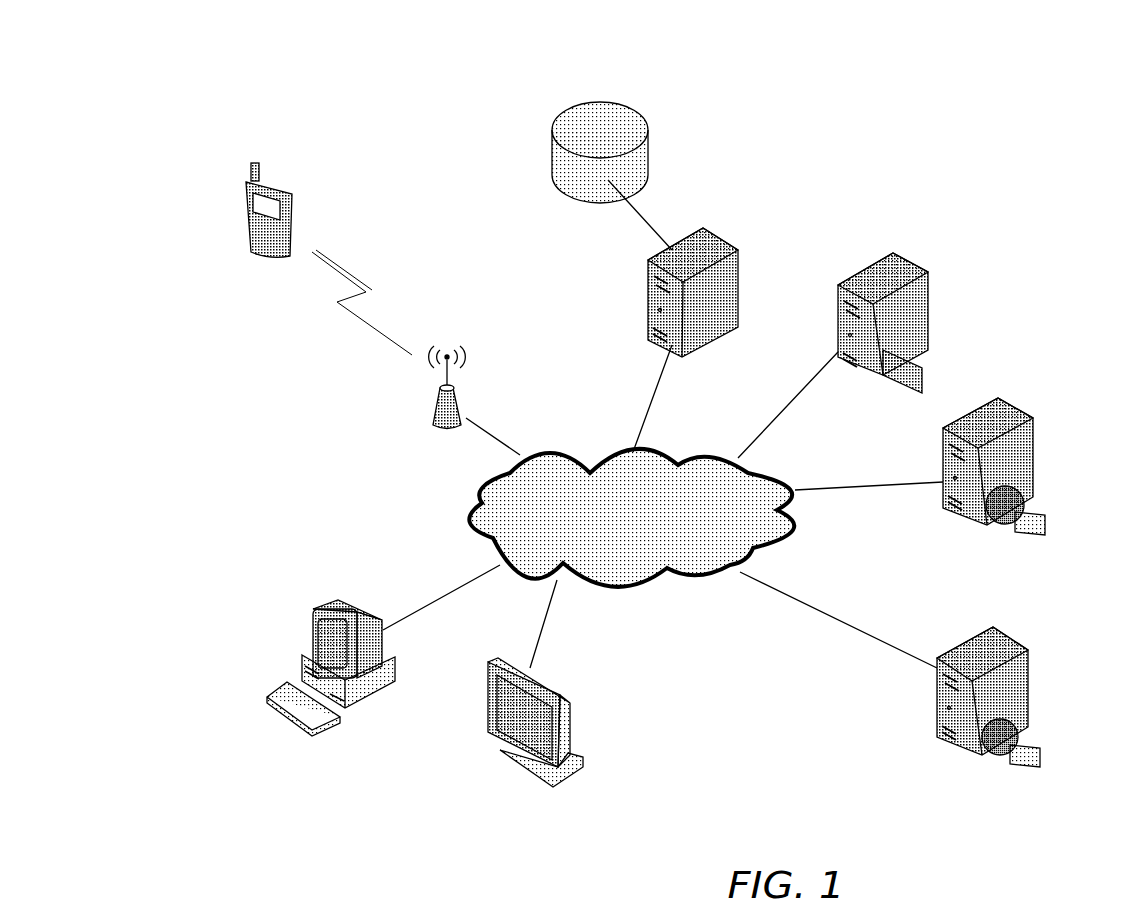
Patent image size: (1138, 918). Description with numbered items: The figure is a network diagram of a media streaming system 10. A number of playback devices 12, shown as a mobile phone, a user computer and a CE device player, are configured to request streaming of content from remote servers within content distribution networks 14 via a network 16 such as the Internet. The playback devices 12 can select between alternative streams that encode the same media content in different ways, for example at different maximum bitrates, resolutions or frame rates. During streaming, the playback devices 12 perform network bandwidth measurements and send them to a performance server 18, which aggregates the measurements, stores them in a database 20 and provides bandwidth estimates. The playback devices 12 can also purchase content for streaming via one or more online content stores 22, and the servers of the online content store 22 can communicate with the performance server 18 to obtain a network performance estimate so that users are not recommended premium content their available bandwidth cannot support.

The streaming system 10 is at (962, 150).
The playback devices 12 is at (286, 184).
The content distribution networks 14 is at (1015, 408).
The network 16 is at (665, 572).
The performance server 18 is at (740, 268).
The database 20 is at (648, 130).
The online content stores 22 is at (930, 300).